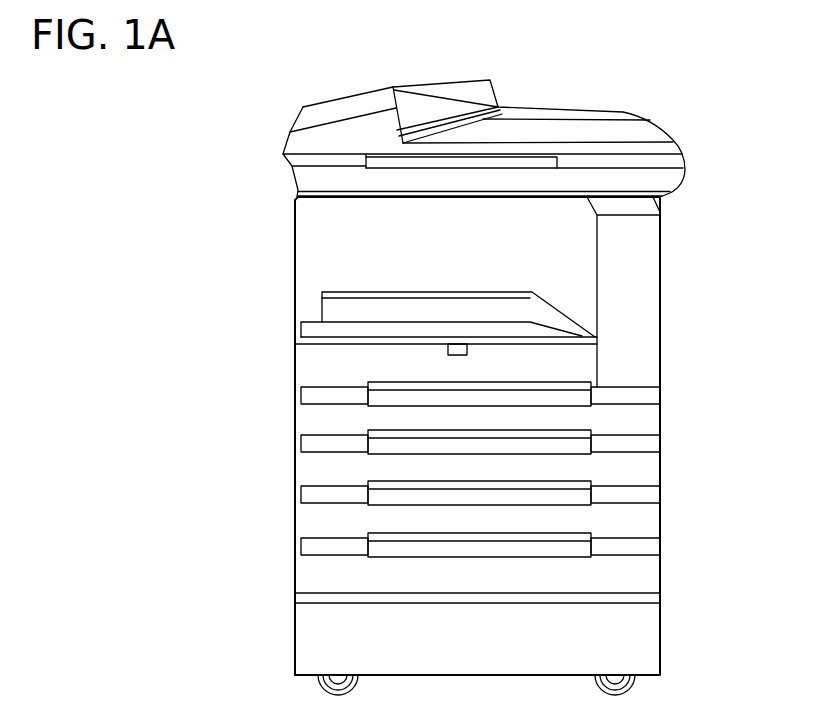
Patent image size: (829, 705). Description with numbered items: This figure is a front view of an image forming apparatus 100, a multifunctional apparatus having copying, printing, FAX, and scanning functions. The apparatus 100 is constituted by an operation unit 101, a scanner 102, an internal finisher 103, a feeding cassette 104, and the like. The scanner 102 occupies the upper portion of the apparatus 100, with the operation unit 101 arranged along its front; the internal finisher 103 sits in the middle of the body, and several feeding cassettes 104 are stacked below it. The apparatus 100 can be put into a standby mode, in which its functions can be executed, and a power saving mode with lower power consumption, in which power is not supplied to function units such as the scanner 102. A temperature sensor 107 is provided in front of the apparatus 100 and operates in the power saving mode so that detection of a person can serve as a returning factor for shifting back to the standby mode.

The image forming apparatus 100 is at (173, 100).
The operation unit 101 is at (480, 163).
The scanner 102 is at (510, 135).
The internal finisher 103 is at (467, 292).
The feeding cassette 104 is at (488, 445).
The temperature sensor 107 is at (452, 345).